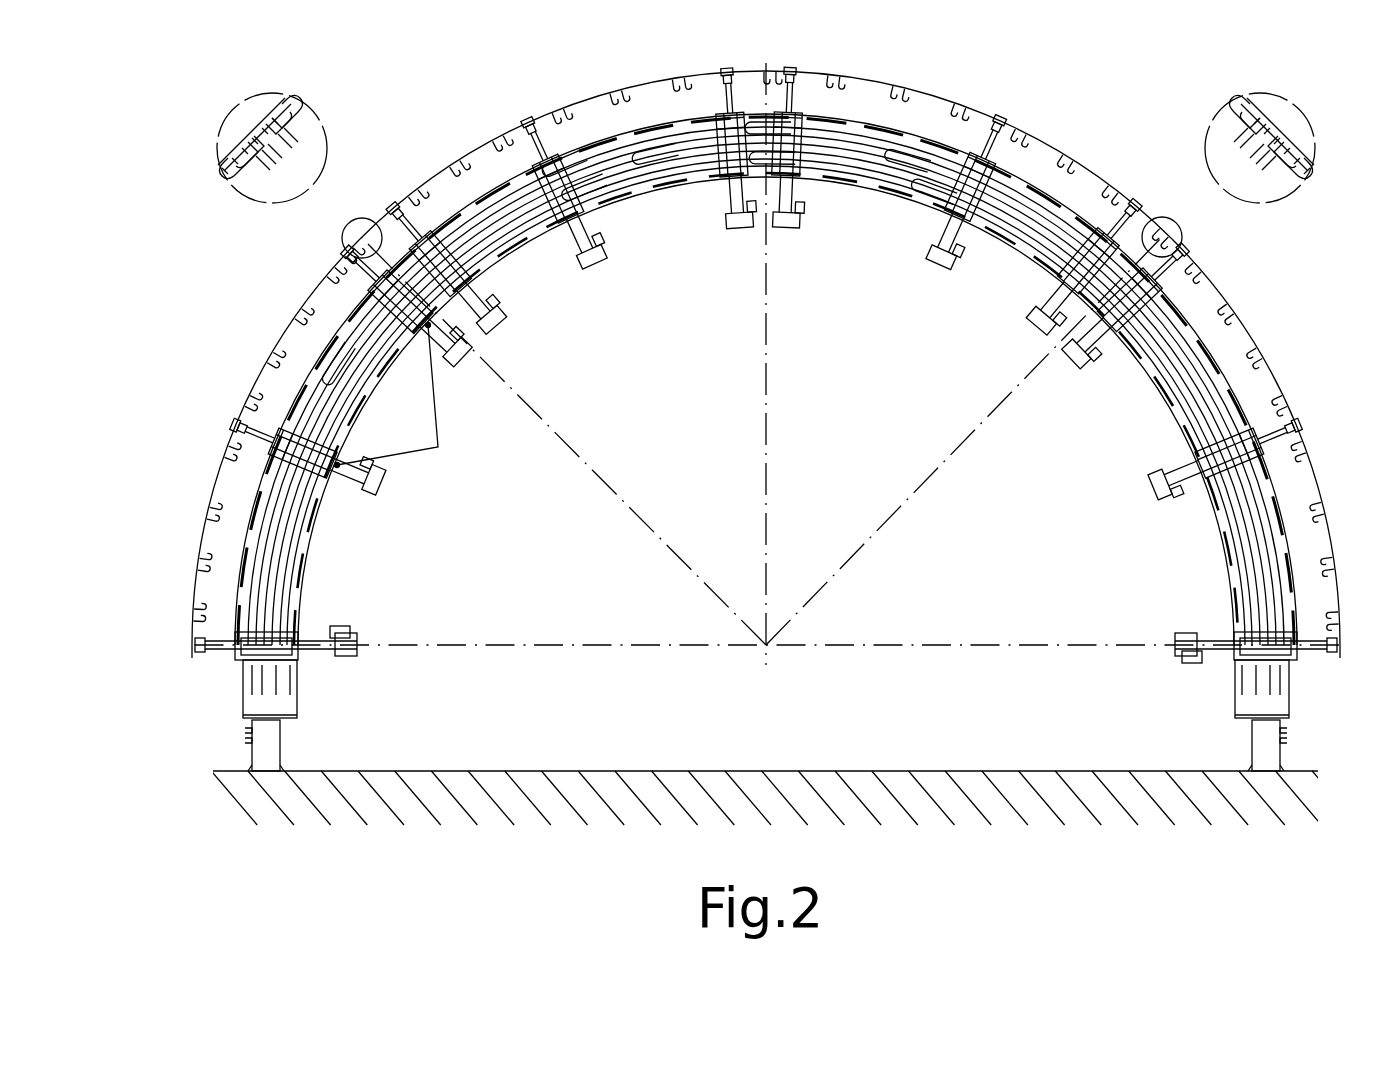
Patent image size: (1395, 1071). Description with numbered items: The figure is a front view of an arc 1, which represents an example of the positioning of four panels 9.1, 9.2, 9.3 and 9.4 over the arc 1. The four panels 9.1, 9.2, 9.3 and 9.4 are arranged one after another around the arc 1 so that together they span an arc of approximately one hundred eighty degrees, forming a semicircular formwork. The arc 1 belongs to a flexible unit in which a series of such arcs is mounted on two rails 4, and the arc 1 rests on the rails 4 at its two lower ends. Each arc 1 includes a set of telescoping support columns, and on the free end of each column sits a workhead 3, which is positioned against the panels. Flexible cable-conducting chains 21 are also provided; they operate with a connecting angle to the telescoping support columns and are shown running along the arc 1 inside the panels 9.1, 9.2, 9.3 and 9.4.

The arc 1 is at (673, 175).
The flexible cable-conducting chain 21 is at (1195, 355).
The workhead 3 is at (347, 252).
The rail 4 is at (250, 752).
The panel 9.1 is at (1270, 378).
The panel 9.2 is at (943, 99).
The panel 9.3 is at (471, 144).
The panel 9.4 is at (256, 375).